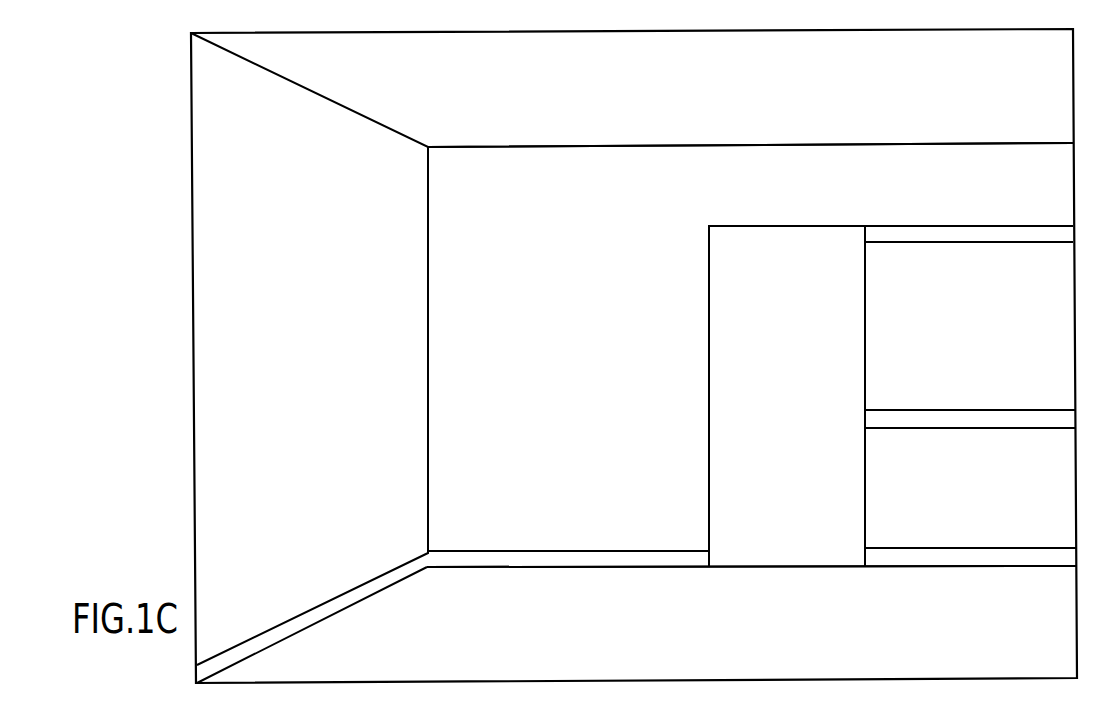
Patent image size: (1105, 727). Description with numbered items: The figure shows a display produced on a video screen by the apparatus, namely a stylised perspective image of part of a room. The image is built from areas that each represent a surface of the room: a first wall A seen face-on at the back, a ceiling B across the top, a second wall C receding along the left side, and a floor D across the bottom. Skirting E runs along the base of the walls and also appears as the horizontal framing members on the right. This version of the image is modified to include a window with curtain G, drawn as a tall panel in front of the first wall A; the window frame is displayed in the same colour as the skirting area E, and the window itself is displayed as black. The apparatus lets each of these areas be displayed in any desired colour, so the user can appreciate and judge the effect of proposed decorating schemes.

The first wall A is at (752, 355).
The ceiling B is at (632, 90).
The second wall C is at (312, 406).
The floor D is at (637, 624).
The skirting E is at (994, 232).
The window with curtain G is at (787, 396).